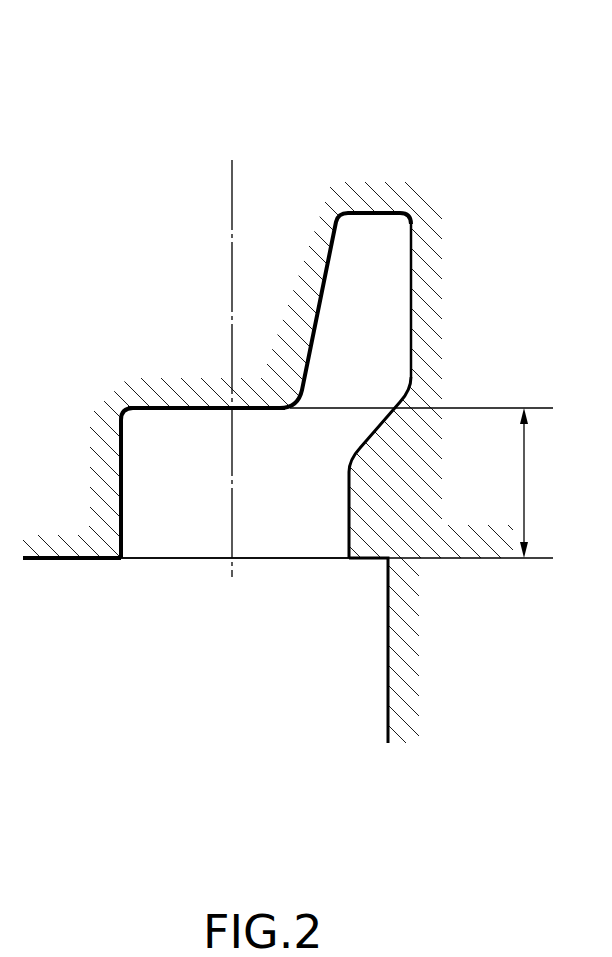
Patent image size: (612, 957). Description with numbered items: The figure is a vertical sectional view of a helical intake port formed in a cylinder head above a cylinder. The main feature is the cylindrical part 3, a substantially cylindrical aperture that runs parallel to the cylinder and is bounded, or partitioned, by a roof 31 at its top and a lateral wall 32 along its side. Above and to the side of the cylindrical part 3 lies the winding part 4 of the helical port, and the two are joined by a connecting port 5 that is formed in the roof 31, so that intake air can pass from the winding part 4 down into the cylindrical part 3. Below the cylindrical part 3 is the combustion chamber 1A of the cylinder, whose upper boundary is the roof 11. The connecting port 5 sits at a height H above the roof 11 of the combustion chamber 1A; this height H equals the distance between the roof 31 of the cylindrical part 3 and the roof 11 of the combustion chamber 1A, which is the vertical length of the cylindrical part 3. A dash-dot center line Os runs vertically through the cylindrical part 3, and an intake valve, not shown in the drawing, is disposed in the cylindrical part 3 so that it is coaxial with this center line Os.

The combustion chamber 1A is at (204, 642).
The cylindrical part 3 is at (190, 523).
The winding part 4 is at (383, 298).
The connecting port 5 is at (313, 450).
The roof of combustion chamber 11 is at (113, 560).
The roof 31 is at (193, 407).
The lateral wall 32 is at (121, 478).
The center line Os is at (232, 168).
The height H is at (540, 483).